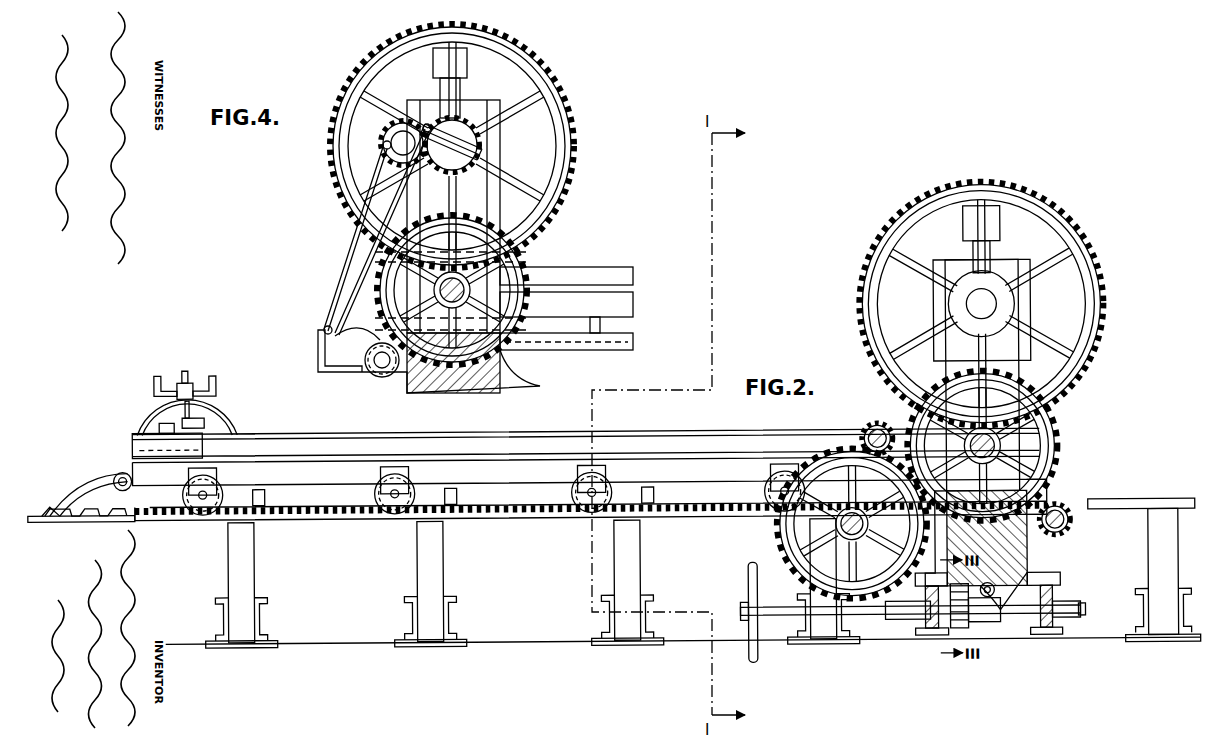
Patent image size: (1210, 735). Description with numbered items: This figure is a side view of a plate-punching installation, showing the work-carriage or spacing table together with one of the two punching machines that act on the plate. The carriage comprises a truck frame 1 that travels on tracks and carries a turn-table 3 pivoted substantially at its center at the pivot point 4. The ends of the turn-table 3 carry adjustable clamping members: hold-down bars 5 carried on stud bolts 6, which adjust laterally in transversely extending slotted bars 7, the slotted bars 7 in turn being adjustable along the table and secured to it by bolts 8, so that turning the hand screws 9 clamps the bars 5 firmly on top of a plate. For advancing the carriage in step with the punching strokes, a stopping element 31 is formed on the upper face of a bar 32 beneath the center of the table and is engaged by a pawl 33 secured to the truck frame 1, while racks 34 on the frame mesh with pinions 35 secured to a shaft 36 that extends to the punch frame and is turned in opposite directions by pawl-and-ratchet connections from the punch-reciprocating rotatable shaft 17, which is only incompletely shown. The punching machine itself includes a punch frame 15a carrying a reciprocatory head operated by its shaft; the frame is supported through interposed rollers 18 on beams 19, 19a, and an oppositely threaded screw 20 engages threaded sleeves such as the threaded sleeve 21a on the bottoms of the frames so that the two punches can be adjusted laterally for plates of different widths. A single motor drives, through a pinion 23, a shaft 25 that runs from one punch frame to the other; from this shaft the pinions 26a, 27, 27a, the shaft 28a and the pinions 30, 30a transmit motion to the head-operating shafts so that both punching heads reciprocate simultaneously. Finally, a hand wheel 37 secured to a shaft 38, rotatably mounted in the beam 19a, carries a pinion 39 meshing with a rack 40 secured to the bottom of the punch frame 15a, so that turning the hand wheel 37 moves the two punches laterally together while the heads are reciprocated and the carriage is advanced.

In FIG. 2, the truck frame 1 is at (345, 473).
In FIG. 2, the turn-table 3 is at (265, 412).
In FIG. 2, the pivot point 4 is at (590, 462).
In FIG. 2, the hold-down bar 5 is at (135, 418).
In FIG. 2, the stud bolt 6 is at (186, 368).
In FIG. 2, the slotted bar 7 is at (165, 420).
In FIG. 2, the bolt 8 is at (200, 420).
In FIG. 2, the hand screw 9 is at (217, 380).
In FIG. 2, the punch frame 15a is at (1027, 560).
In FIG. 4, the rotatable shaft 17 is at (487, 145).
In FIG. 2, the roller 18 is at (1060, 585).
In FIG. 2, the beam 19 is at (928, 630).
In FIG. 2, the beam 19a is at (1052, 630).
In FIG. 2, the oppositely threaded screw 20 is at (990, 598).
In FIG. 2, the threaded sleeve 21a is at (1000, 612).
In FIG. 2, the pinion 23 is at (878, 422).
In FIG. 2, the shaft 25 is at (836, 536).
In FIG. 2, the pinion 26a is at (770, 540).
In FIG. 4, the pinion 27 is at (522, 258).
In FIG. 2, the pinion 27a is at (1048, 440).
In FIG. 2, the shaft 28a is at (1002, 452).
In FIG. 4, the pinion 30 is at (566, 118).
In FIG. 2, the pinion 30a is at (1110, 245).
In FIG. 2, the stopping element 31 is at (53, 506).
In FIG. 2, the bar 32 is at (83, 518).
In FIG. 2, the pawl 33 is at (100, 475).
In FIG. 2, the rack 34 is at (152, 518).
In FIG. 2, the pinion 35 is at (1073, 522).
In FIG. 4, the shaft 36 is at (372, 372).
In FIG. 2, the hand wheel 37 is at (757, 652).
In FIG. 2, the shaft 38 is at (875, 616).
In FIG. 2, the pinion 39 is at (955, 630).
In FIG. 2, the rack 40 is at (982, 624).